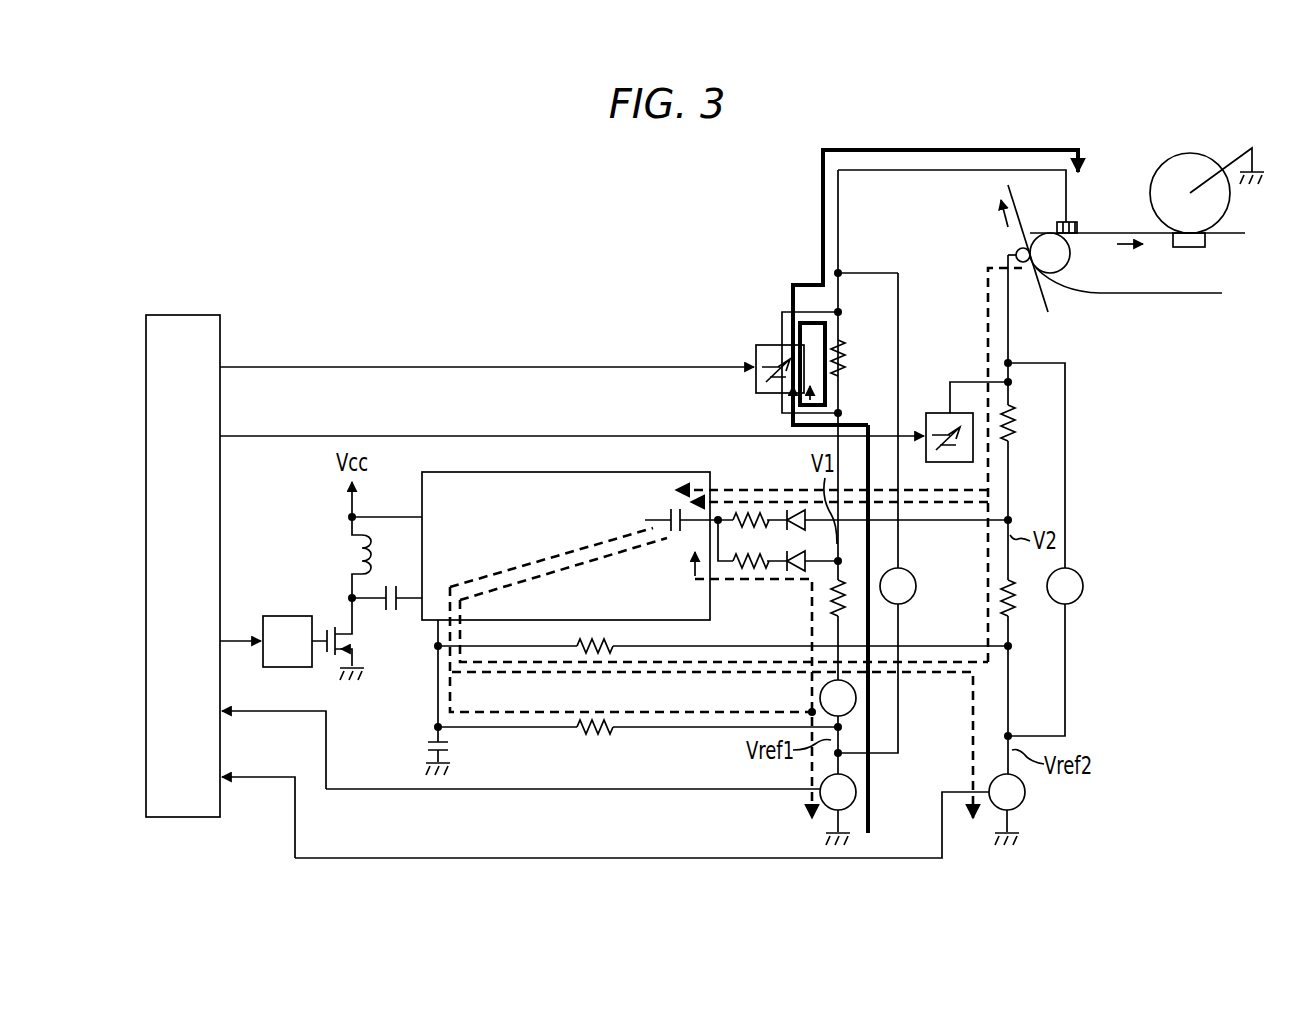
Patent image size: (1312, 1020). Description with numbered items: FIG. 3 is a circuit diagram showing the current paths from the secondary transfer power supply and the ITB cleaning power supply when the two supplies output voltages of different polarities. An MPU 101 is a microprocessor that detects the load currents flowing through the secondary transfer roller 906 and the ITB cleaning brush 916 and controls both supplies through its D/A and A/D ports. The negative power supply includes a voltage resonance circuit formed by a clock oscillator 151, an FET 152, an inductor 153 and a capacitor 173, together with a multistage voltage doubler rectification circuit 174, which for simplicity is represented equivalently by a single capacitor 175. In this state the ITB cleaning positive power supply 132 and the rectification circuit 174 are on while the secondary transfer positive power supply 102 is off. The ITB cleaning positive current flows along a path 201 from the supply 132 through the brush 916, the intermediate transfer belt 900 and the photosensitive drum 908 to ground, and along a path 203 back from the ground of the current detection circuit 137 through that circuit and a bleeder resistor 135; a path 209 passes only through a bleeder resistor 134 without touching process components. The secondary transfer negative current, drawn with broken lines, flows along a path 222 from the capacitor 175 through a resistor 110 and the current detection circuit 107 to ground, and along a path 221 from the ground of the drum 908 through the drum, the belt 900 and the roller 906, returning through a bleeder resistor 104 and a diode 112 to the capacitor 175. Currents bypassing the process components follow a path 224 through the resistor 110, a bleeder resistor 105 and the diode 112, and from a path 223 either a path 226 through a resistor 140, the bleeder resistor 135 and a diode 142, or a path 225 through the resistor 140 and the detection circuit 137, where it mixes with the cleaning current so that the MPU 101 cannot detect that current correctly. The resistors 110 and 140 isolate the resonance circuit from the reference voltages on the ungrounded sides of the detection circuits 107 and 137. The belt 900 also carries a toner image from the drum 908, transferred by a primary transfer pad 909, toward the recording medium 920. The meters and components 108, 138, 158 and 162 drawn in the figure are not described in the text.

The MPU 101 is at (146, 540).
The secondary transfer positive power supply 102 is at (936, 413).
The bleeder resistor 104 is at (1012, 425).
The bleeder resistor 105 is at (1004, 602).
The current detection circuit 107 is at (1022, 801).
The voltage detection circuit V2 108 is at (1083, 579).
The resistor 110 is at (596, 642).
The diode 112 is at (796, 511).
The ITB cleaning positive power supply 132 is at (770, 344).
The bleeder resistor 134 is at (840, 342).
The bleeder resistor 135 is at (834, 616).
The current detection circuit 137 is at (856, 792).
The voltage detection circuit V1 138 is at (904, 605).
The resistor 140 is at (592, 740).
The diode 142 is at (788, 572).
The clock oscillator 151 is at (290, 616).
The field-effect transistor 152 is at (358, 645).
The inductor 153 is at (361, 556).
The voltage detection circuit V3 158 is at (814, 703).
The capacitor 162 is at (392, 584).
The capacitor 173 is at (429, 745).
The multistage voltage doubler rectification circuit 174 is at (528, 472).
The capacitor 175 is at (668, 511).
The path 201 is at (820, 213).
The path 203 is at (873, 818).
The path 209 is at (812, 323).
The path 221 is at (986, 291).
The path 222 is at (970, 714).
The path 223 is at (685, 714).
The path 224 is at (986, 541).
The path 225 is at (806, 829).
The path 226 is at (690, 584).
The intermediate transfer belt 900 is at (1140, 294).
The secondary transfer roller 906 is at (1016, 254).
The photosensitive drum 908 is at (1172, 158).
The primary transfer pad 909 is at (1190, 247).
The ITB cleaning brush 916 is at (1074, 221).
The recording medium 920 is at (1050, 304).